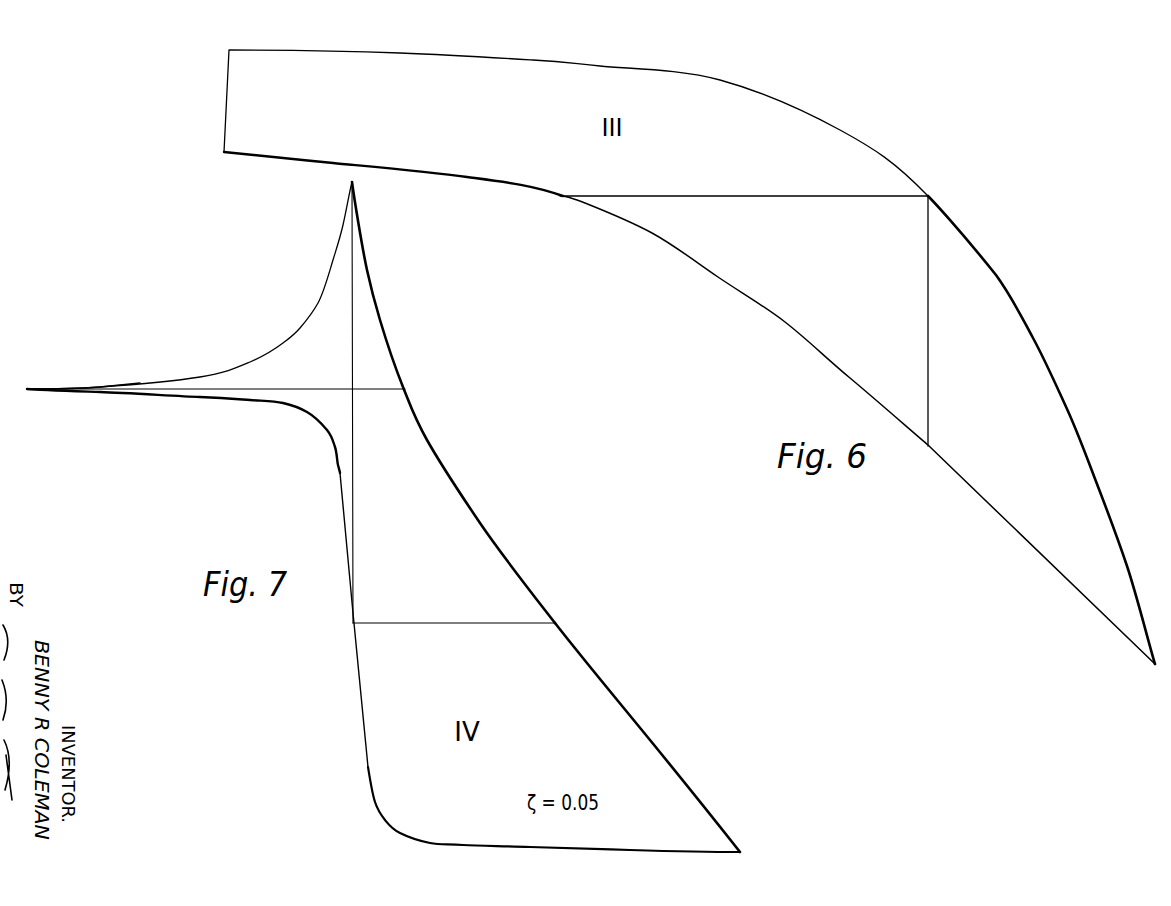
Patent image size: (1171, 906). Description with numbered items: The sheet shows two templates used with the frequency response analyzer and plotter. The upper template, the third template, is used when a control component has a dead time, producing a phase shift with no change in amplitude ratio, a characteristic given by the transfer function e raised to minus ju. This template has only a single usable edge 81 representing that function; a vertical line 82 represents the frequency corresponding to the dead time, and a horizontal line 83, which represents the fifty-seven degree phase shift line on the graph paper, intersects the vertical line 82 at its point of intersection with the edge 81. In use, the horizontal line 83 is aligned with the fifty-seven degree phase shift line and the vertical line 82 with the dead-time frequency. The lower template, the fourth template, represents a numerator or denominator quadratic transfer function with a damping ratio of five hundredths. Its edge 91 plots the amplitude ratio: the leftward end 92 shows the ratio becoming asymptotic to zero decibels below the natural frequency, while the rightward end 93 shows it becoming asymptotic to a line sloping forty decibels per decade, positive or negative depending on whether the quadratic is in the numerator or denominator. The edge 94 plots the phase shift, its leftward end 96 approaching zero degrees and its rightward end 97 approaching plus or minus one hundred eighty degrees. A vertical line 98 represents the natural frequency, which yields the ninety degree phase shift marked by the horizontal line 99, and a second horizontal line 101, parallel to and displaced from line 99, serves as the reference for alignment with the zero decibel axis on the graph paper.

In FIG. 6, the usable edge 81 is at (840, 130).
In FIG. 6, the vertical line 82 is at (926, 338).
In FIG. 6, the horizontal line 83 is at (652, 198).
In FIG. 7, the edge 91 is at (296, 325).
In FIG. 7, the leftward end 92 is at (122, 382).
In FIG. 7, the rightward end 93 is at (620, 697).
In FIG. 7, the edge 94 is at (353, 682).
In FIG. 7, the leftward end 96 is at (243, 400).
In FIG. 7, the rightward end 97 is at (447, 843).
In FIG. 7, the vertical line 98 is at (355, 479).
In FIG. 7, the horizontal line 99 is at (482, 622).
In FIG. 7, the second horizontal line 101 is at (323, 388).